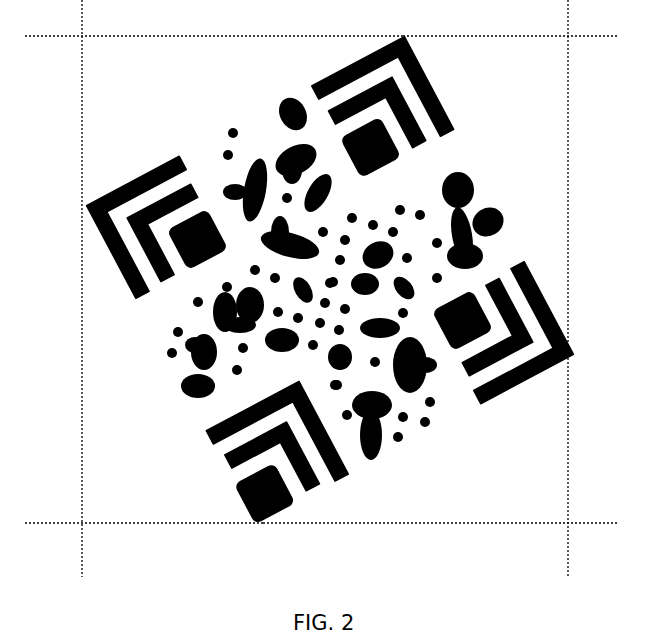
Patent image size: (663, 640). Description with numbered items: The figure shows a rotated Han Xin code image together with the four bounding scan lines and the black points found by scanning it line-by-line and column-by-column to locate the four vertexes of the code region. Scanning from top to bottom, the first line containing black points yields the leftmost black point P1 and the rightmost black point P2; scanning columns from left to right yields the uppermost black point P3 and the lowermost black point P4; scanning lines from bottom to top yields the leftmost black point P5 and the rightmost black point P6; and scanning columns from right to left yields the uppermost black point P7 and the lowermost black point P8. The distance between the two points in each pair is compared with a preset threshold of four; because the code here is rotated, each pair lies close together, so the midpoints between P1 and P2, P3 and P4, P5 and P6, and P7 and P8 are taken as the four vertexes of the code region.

The leftmost black point of the first black-containing line scanned from top P1 is at (214, 21).
The rightmost black point of the first black-containing line scanned from top P2 is at (510, 21).
The uppermost black point of the first black-containing column scanned from left P3 is at (67, 104).
The lowermost black point of the first black-containing column scanned from left P4 is at (67, 390).
The leftmost black point of the first black-containing line scanned from bottom P5 is at (144, 540).
The rightmost black point of the first black-containing line scanned from bottom P6 is at (440, 540).
The uppermost black point of the first black-containing column scanned from right P7 is at (580, 175).
The lowermost black point of the first black-containing column scanned from right P8 is at (580, 460).